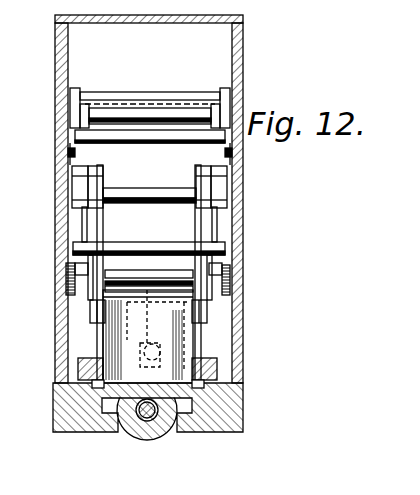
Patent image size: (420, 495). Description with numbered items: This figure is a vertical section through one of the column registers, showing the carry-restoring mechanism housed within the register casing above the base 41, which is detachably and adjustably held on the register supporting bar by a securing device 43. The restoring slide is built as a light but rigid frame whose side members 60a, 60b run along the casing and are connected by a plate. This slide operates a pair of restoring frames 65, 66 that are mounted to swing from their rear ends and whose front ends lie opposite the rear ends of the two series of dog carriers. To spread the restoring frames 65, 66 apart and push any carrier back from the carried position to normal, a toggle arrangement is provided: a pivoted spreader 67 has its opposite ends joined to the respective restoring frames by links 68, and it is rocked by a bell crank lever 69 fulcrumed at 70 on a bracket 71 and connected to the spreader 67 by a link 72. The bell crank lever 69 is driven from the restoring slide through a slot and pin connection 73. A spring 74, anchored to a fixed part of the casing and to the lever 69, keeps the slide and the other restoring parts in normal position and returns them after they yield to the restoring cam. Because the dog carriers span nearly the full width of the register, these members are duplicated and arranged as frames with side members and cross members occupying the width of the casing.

The base 41 is at (242, 410).
The securing device 43 is at (140, 430).
The side member of restoring slide 60a is at (217, 371).
The side member of restoring slide 60b is at (57, 388).
The restoring frame 65 is at (72, 126).
The restoring frame 66 is at (66, 280).
The spreader 67 is at (103, 207).
The links 68 is at (73, 150).
The bell crank lever 69 is at (103, 334).
The fulcrum 70 is at (90, 313).
The bracket 71 is at (127, 338).
The link 72 is at (97, 233).
The slot and pin connection 73 is at (78, 373).
The spring 74 is at (150, 284).